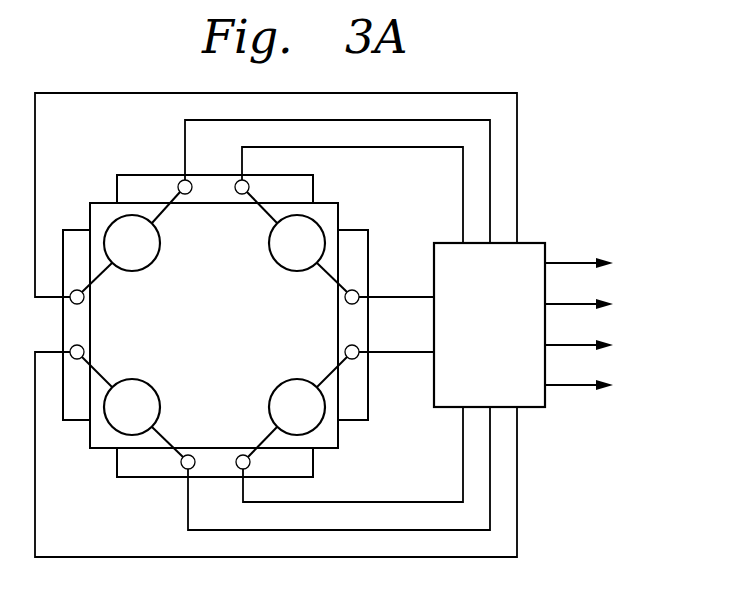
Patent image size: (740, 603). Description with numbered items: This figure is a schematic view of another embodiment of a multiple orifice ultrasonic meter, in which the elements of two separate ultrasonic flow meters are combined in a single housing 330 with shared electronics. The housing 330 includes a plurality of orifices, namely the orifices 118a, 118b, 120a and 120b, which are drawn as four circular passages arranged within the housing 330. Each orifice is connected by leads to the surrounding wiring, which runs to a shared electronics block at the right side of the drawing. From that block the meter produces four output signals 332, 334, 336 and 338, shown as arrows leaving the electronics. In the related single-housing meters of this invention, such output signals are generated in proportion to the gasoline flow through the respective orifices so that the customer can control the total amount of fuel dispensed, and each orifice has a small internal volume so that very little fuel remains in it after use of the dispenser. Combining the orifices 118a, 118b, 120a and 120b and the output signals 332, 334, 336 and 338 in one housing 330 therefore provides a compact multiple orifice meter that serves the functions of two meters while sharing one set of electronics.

The housing 330 is at (103, 200).
The orifice 118a is at (162, 242).
The orifice 118b is at (282, 272).
The orifice 120a is at (148, 382).
The orifice 120b is at (270, 405).
The output signal 332 is at (567, 258).
The output signal 334 is at (587, 308).
The output signal 336 is at (587, 349).
The output signal 338 is at (568, 390).